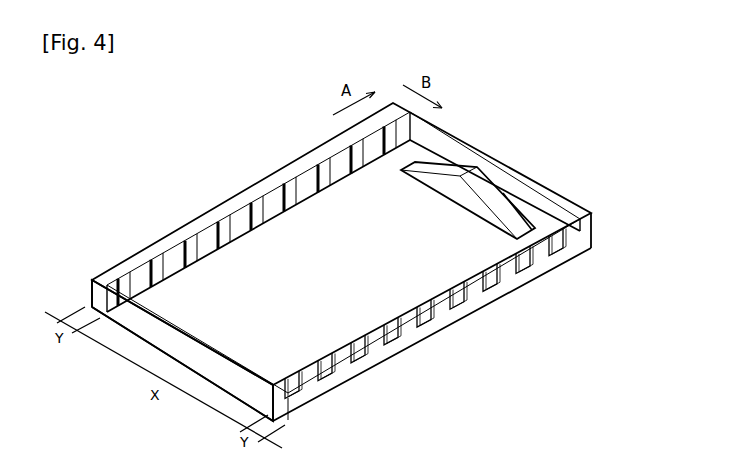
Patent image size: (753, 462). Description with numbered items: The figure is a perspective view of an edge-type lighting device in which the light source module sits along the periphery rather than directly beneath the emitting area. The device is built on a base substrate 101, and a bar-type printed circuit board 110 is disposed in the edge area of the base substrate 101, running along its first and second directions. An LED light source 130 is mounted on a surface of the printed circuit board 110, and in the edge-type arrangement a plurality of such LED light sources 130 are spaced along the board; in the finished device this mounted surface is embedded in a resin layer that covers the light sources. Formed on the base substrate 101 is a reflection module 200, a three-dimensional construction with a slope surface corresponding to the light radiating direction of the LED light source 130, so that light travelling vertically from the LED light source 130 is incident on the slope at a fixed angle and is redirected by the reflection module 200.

The base substrate 101 is at (228, 378).
The printed circuit board 110 is at (578, 215).
The LED light source 130 is at (306, 188).
The reflection module 200 is at (455, 170).